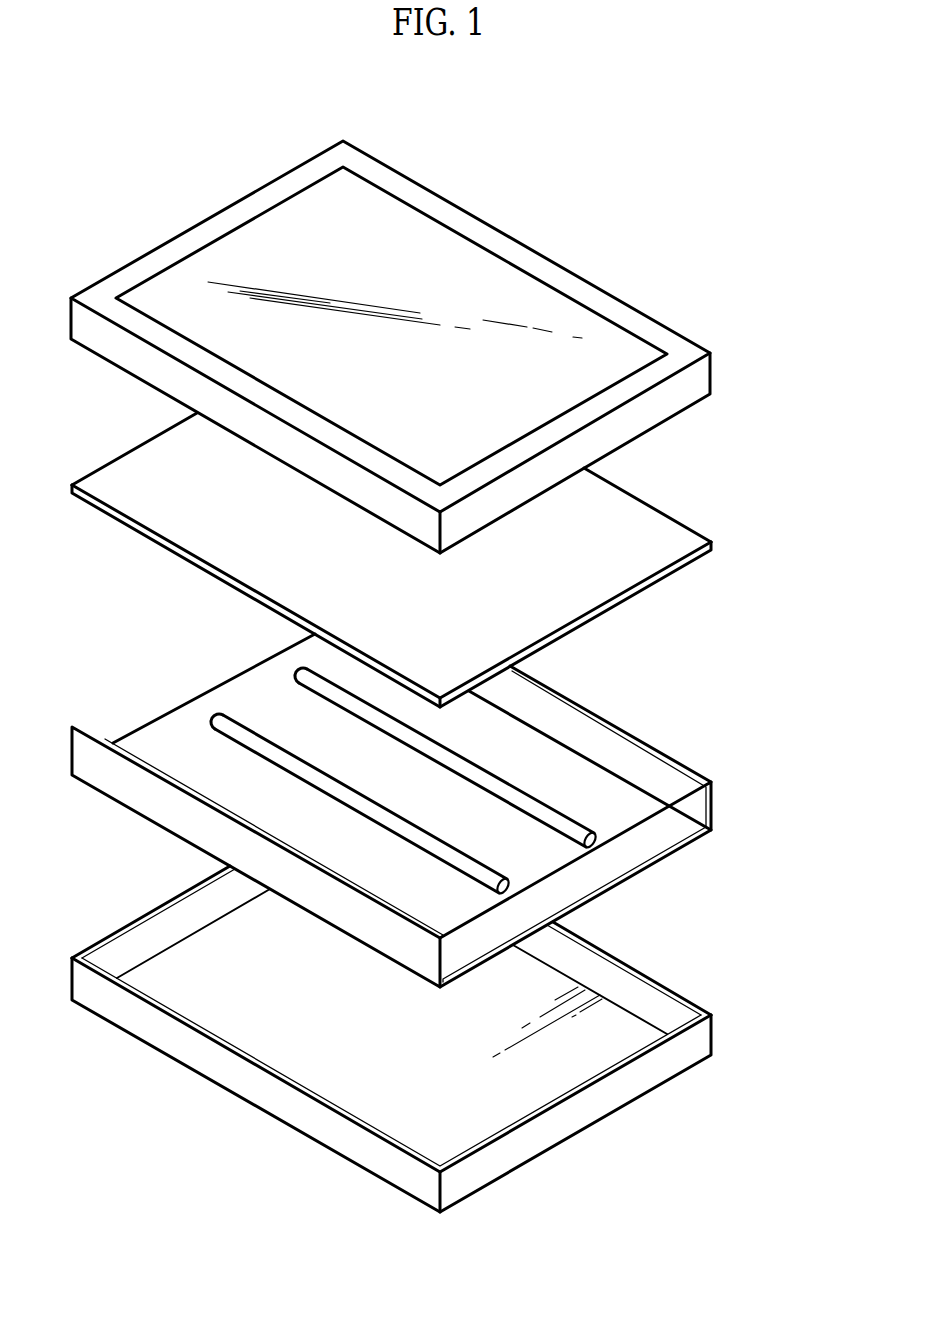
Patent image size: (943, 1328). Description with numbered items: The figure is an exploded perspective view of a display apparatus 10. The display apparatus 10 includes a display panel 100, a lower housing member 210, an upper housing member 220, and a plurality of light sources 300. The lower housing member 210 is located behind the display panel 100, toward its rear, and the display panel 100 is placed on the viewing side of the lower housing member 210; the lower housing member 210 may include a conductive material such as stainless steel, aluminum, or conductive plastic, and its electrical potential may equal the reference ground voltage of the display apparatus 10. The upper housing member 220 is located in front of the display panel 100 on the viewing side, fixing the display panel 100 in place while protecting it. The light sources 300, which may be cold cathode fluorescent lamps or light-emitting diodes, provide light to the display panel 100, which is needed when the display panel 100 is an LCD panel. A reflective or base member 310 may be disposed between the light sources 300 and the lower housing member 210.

The display apparatus 10 is at (671, 215).
The display panel 100 is at (652, 521).
The lower housing member 210 is at (657, 983).
The upper housing member 220 is at (653, 335).
The light source 300 is at (558, 818).
The reflective or base member 310 is at (665, 842).